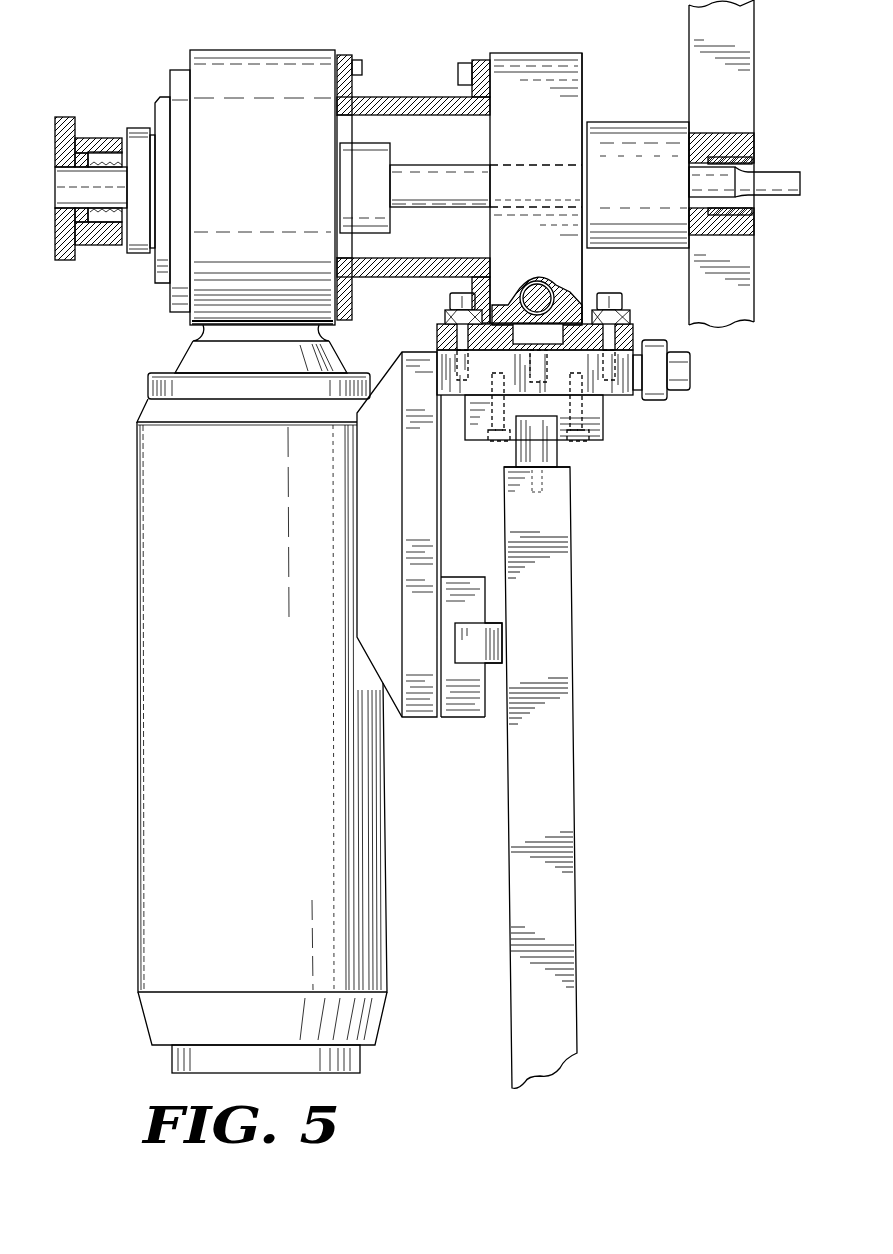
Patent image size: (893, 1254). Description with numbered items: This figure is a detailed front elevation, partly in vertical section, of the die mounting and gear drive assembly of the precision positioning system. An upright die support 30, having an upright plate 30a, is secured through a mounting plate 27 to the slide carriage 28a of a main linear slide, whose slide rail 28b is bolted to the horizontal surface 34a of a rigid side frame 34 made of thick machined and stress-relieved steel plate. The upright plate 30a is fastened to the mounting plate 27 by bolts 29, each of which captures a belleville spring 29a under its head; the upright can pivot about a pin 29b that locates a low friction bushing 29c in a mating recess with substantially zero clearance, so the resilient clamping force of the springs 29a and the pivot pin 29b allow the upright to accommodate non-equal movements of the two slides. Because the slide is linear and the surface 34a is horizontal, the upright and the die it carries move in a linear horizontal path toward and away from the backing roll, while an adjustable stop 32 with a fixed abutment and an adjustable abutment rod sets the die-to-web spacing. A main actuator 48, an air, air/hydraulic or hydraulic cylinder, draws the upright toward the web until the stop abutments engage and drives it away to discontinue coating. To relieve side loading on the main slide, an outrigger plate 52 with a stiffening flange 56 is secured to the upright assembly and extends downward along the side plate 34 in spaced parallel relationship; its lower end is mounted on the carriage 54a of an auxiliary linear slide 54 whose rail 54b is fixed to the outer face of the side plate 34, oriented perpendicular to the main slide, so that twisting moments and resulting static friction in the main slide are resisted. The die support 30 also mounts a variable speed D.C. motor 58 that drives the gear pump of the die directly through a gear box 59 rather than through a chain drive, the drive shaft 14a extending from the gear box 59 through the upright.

The gear box 59 is at (280, 50).
The upright die support 30 is at (523, 50).
The upright plate 30a is at (581, 67).
The drive shaft 14a is at (515, 165).
The bolt 29 is at (448, 300).
The belleville spring 29a is at (445, 316).
The pin 29b is at (508, 290).
The low friction bushing 29c is at (508, 320).
The adjustable stop 32 is at (553, 286).
The mounting plate 27 is at (620, 398).
The main actuator 48 is at (667, 392).
The slide carriage 28a is at (612, 432).
The slide rail 28b is at (516, 448).
The side frame 34 is at (570, 642).
The horizontal surface 34a is at (568, 468).
The stiffening flange 56 is at (394, 523).
The outrigger plate 52 is at (442, 516).
The auxiliary linear slide 54 is at (494, 655).
The carriage 54a is at (455, 577).
The rail 54b is at (498, 628).
The variable speed D.C. motor 58 is at (137, 764).